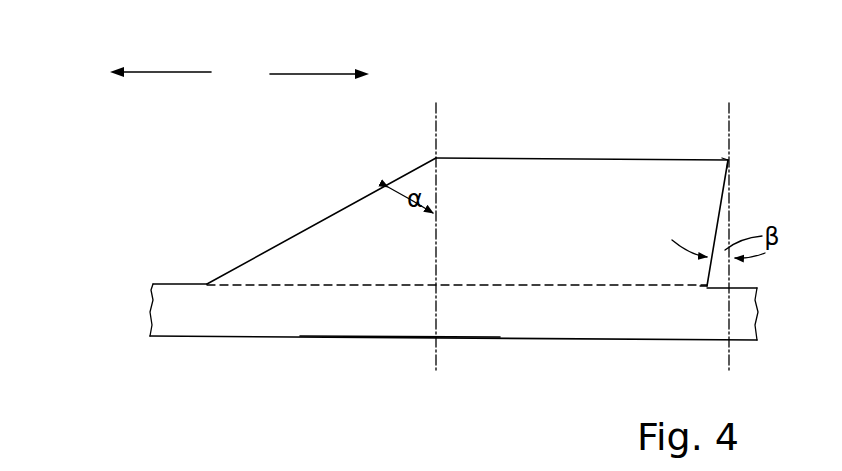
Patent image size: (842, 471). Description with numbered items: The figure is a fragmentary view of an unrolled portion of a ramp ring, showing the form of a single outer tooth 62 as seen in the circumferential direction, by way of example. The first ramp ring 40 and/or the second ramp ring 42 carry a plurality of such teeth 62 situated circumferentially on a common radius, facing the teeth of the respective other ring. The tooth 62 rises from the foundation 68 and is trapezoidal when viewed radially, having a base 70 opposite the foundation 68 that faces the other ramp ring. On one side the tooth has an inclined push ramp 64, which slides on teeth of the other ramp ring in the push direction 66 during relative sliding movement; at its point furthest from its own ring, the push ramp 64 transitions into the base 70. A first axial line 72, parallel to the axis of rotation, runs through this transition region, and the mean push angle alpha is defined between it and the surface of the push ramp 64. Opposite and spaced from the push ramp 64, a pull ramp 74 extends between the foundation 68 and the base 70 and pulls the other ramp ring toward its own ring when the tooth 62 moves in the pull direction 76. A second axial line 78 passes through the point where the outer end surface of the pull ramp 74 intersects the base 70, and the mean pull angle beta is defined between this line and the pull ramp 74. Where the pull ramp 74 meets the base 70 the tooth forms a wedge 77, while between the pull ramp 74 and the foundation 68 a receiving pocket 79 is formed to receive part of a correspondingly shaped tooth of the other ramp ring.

The push direction 66 is at (176, 72).
The pull direction 76 is at (304, 74).
The first ramp ring 40 is at (283, 310).
The second ramp ring 42 is at (394, 364).
The tooth 62 is at (505, 192).
The push ramp 64 is at (281, 240).
The base 70 is at (578, 157).
The pull ramp 74 is at (722, 212).
The wedge 77 is at (726, 158).
The receiving pocket 79 is at (713, 282).
The first axial line 72 is at (433, 128).
The second axial line 78 is at (733, 131).
The foundation 68 is at (527, 282).